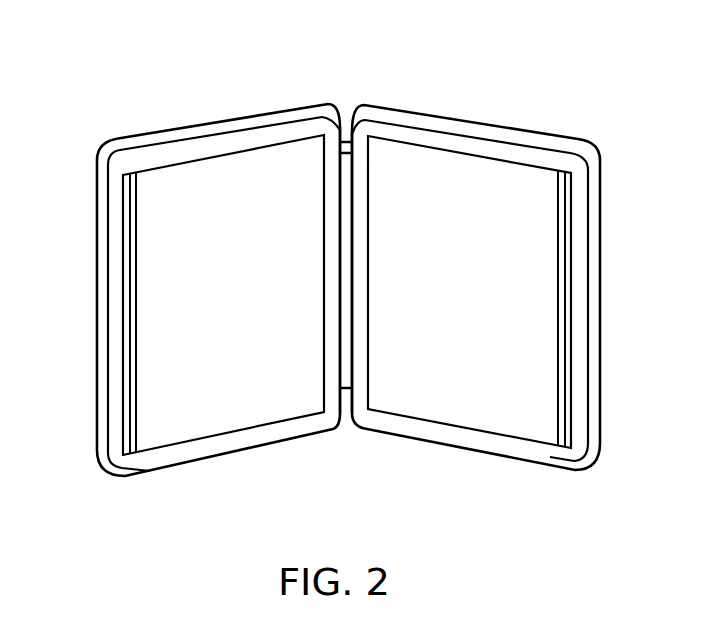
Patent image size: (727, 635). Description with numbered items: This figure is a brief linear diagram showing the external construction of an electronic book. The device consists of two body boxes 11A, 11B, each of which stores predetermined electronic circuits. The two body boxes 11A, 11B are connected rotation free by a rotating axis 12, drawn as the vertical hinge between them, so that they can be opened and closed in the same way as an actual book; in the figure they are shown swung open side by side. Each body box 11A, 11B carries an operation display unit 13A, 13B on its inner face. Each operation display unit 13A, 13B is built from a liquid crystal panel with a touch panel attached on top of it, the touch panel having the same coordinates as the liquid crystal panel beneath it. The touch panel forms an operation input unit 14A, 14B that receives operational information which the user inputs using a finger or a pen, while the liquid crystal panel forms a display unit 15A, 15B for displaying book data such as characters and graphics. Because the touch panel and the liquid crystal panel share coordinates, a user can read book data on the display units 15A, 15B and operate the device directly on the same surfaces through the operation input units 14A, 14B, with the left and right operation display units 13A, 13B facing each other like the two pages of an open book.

The body box 11A is at (201, 125).
The body box 11B is at (386, 103).
The rotating axis 12 is at (347, 122).
The operation display unit 13A is at (188, 259).
The operation input unit 14A is at (120, 259).
The display unit 15A is at (150, 172).
The operation display unit 13B is at (492, 257).
The operation input unit 14B is at (542, 256).
The display unit 15B is at (557, 170).